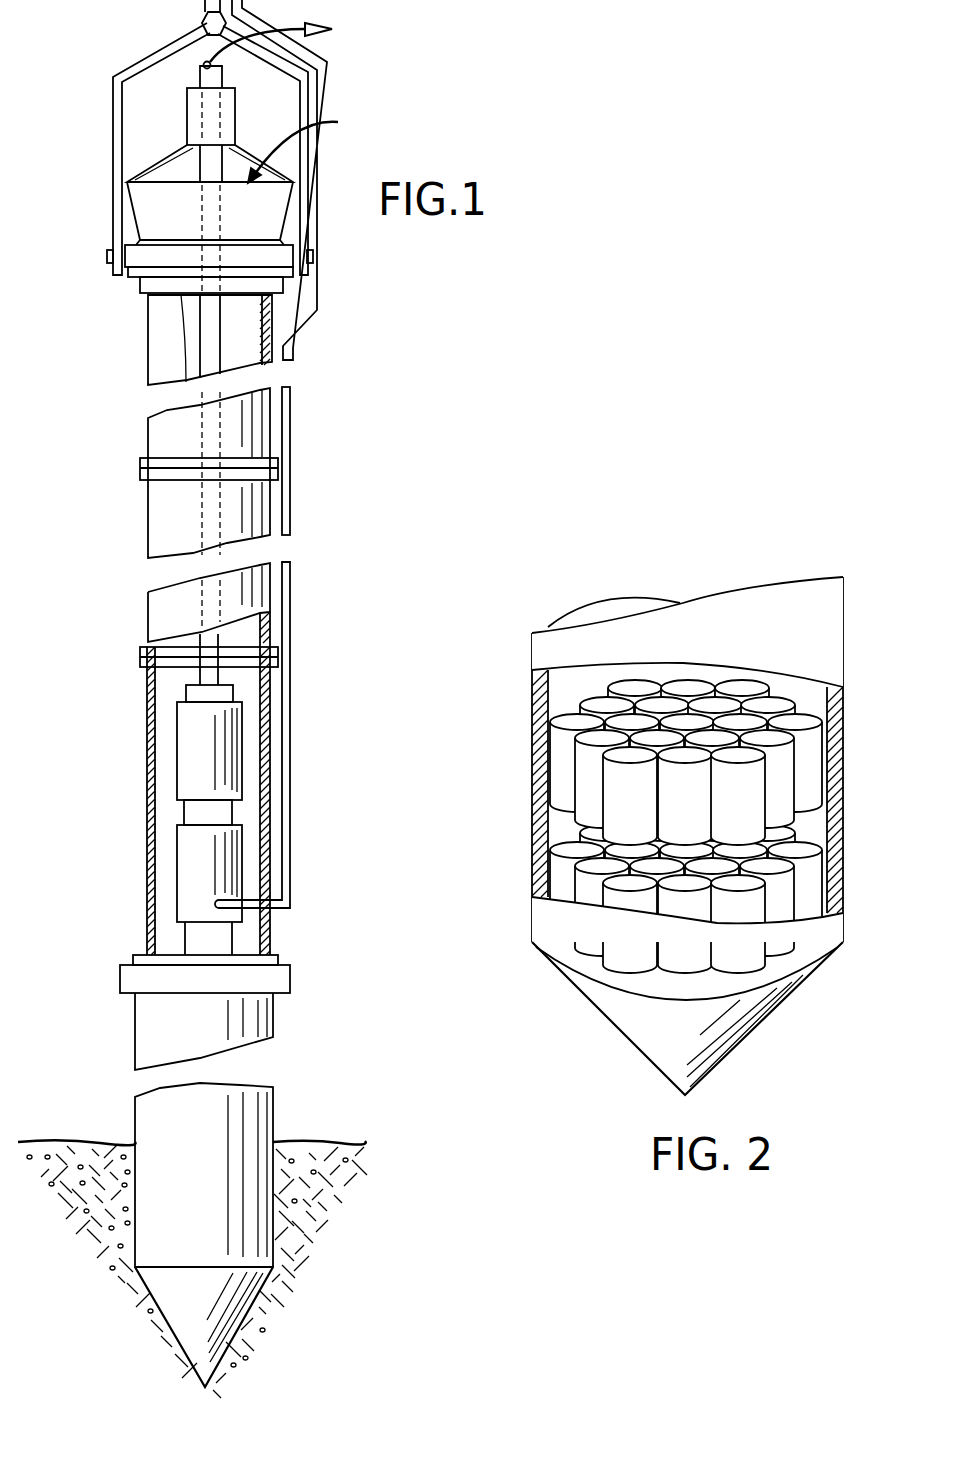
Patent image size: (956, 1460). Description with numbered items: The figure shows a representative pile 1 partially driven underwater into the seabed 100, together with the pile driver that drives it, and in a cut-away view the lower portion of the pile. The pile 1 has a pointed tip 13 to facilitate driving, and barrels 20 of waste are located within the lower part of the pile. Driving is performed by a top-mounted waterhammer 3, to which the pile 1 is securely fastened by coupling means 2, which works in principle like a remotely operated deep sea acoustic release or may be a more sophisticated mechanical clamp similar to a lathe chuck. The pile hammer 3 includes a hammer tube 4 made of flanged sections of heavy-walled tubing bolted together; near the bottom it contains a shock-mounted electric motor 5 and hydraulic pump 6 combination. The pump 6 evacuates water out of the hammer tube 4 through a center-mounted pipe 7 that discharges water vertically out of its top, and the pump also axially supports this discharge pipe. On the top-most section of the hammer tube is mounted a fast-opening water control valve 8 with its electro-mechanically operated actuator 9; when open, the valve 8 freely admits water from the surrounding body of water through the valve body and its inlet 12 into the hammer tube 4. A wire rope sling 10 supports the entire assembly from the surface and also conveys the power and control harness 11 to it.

In FIG. 1, the pile 1 is at (275, 1022).
In FIG. 2, the pile 1 is at (651, 775).
In FIG. 1, the coupling means 2 is at (120, 995).
In FIG. 1, the waterhammer 3 is at (148, 532).
In FIG. 1, the hammer tube 4 is at (147, 797).
In FIG. 1, the electric motor 5 is at (177, 863).
In FIG. 1, the hydraulic pump 6 is at (177, 738).
In FIG. 1, the center-mounted pipe 7 is at (200, 358).
In FIG. 1, the water control valve 8 is at (132, 208).
In FIG. 1, the actuator 9 is at (187, 127).
In FIG. 1, the wire rope sling 10 is at (148, 57).
In FIG. 1, the power and control harness 11 is at (305, 343).
In FIG. 1, the inlet 12 is at (313, 148).
In FIG. 1, the pointed tip 13 is at (160, 1319).
In FIG. 2, the pointed tip 13 is at (637, 1050).
In FIG. 2, the barrels 20 is at (562, 872).
In FIG. 1, the seabed 100 is at (78, 1206).